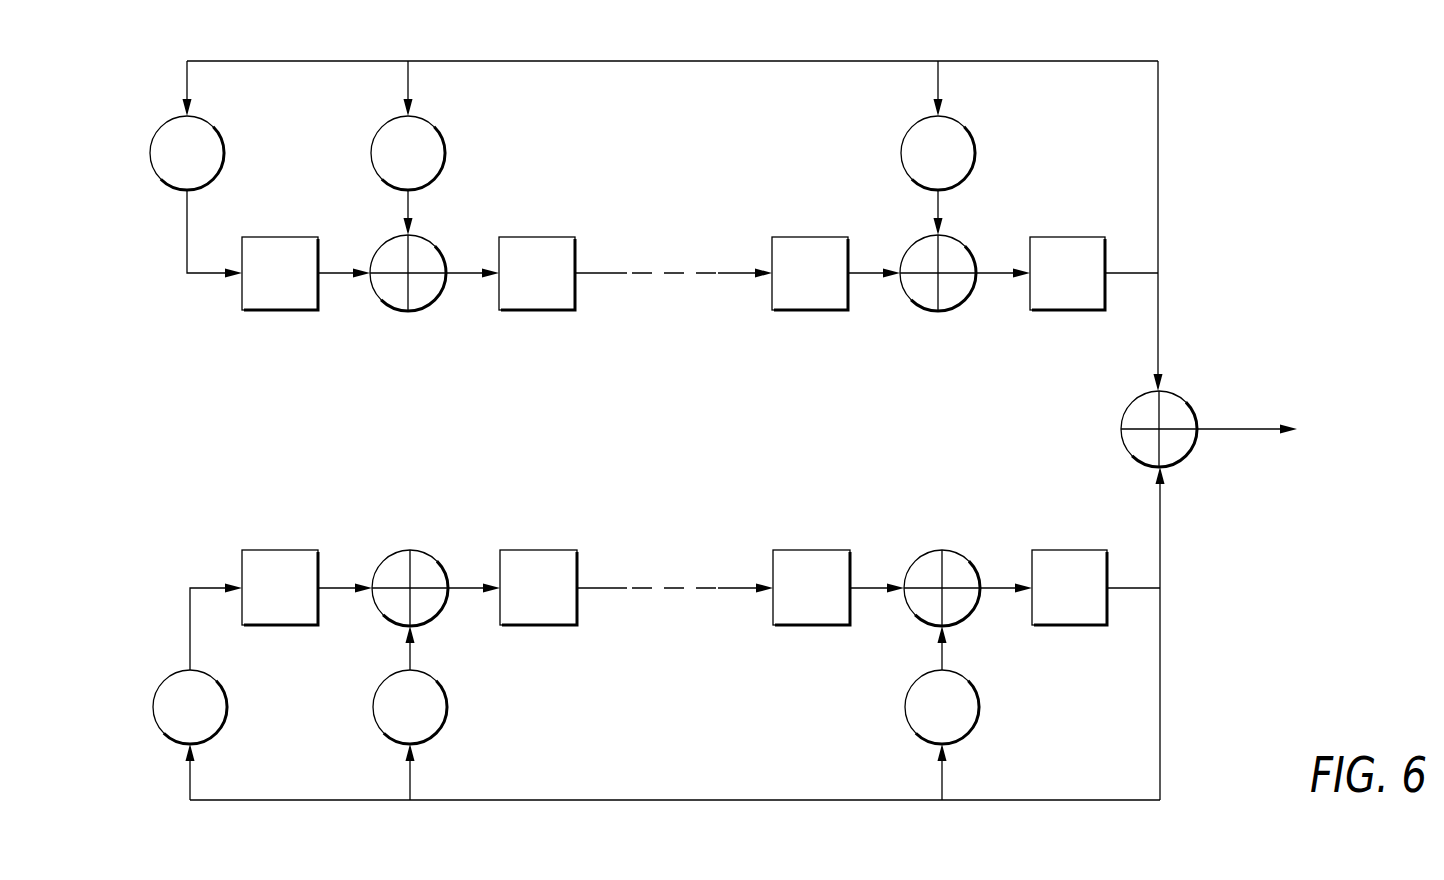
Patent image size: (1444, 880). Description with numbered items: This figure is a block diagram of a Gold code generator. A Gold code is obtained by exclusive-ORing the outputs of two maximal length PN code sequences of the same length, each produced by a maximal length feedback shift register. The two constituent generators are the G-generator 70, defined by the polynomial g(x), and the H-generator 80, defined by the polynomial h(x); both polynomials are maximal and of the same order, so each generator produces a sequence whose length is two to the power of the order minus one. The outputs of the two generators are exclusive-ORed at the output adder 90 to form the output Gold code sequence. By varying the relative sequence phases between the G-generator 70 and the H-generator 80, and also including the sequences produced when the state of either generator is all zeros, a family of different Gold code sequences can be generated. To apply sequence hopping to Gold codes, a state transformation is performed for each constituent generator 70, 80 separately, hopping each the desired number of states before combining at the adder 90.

The G-generator 70 is at (599, 273).
The H-generator 80 is at (599, 588).
The output modulo-2 adder (numeral not printed on this sheet) 90 is at (1235, 430).